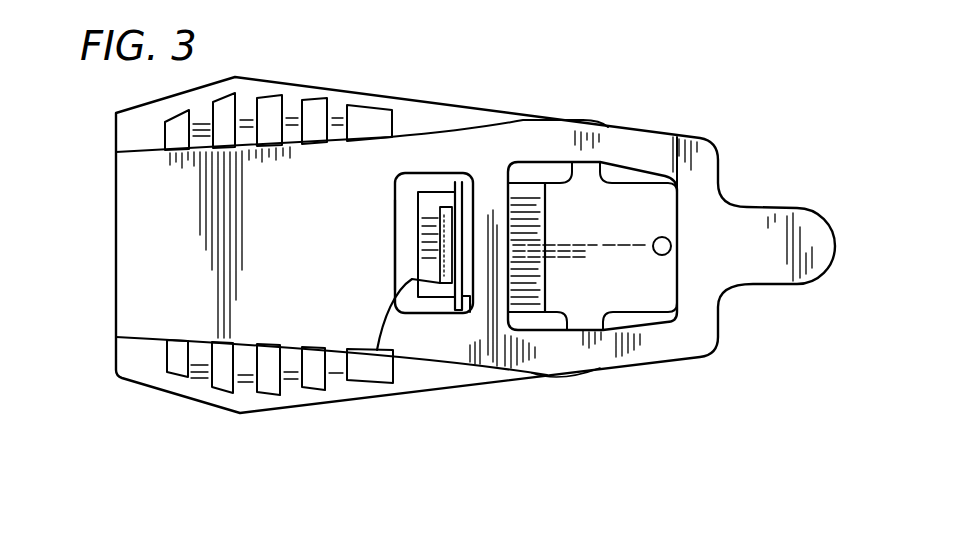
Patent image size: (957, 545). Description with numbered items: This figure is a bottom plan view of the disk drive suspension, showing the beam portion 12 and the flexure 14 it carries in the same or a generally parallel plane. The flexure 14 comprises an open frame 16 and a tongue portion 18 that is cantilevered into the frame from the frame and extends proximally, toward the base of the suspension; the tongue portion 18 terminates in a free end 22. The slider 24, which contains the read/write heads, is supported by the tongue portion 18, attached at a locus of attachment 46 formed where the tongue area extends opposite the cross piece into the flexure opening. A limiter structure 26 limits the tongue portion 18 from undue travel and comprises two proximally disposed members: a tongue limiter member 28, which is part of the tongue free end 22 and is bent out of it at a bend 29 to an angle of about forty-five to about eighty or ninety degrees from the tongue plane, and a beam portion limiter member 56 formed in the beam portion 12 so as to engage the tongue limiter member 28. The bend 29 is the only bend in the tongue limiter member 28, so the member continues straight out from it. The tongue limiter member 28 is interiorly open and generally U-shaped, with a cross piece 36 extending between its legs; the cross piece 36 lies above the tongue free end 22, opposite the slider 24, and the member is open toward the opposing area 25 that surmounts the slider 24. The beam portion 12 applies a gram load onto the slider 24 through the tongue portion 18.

The beam portion 12 is at (150, 320).
The flexure 14 is at (294, 93).
The open frame 16 is at (418, 113).
The tongue portion 18 is at (527, 210).
The free end 22 is at (520, 300).
The slider 24 is at (377, 350).
The opposing area 25 is at (423, 193).
The limiter structure 26 is at (432, 308).
The tongue limiter member 28 is at (458, 178).
The bend 29 is at (463, 313).
The cross piece 36 is at (418, 257).
The locus of attachment 46 is at (523, 243).
The beam portion limiter member 56 is at (437, 245).